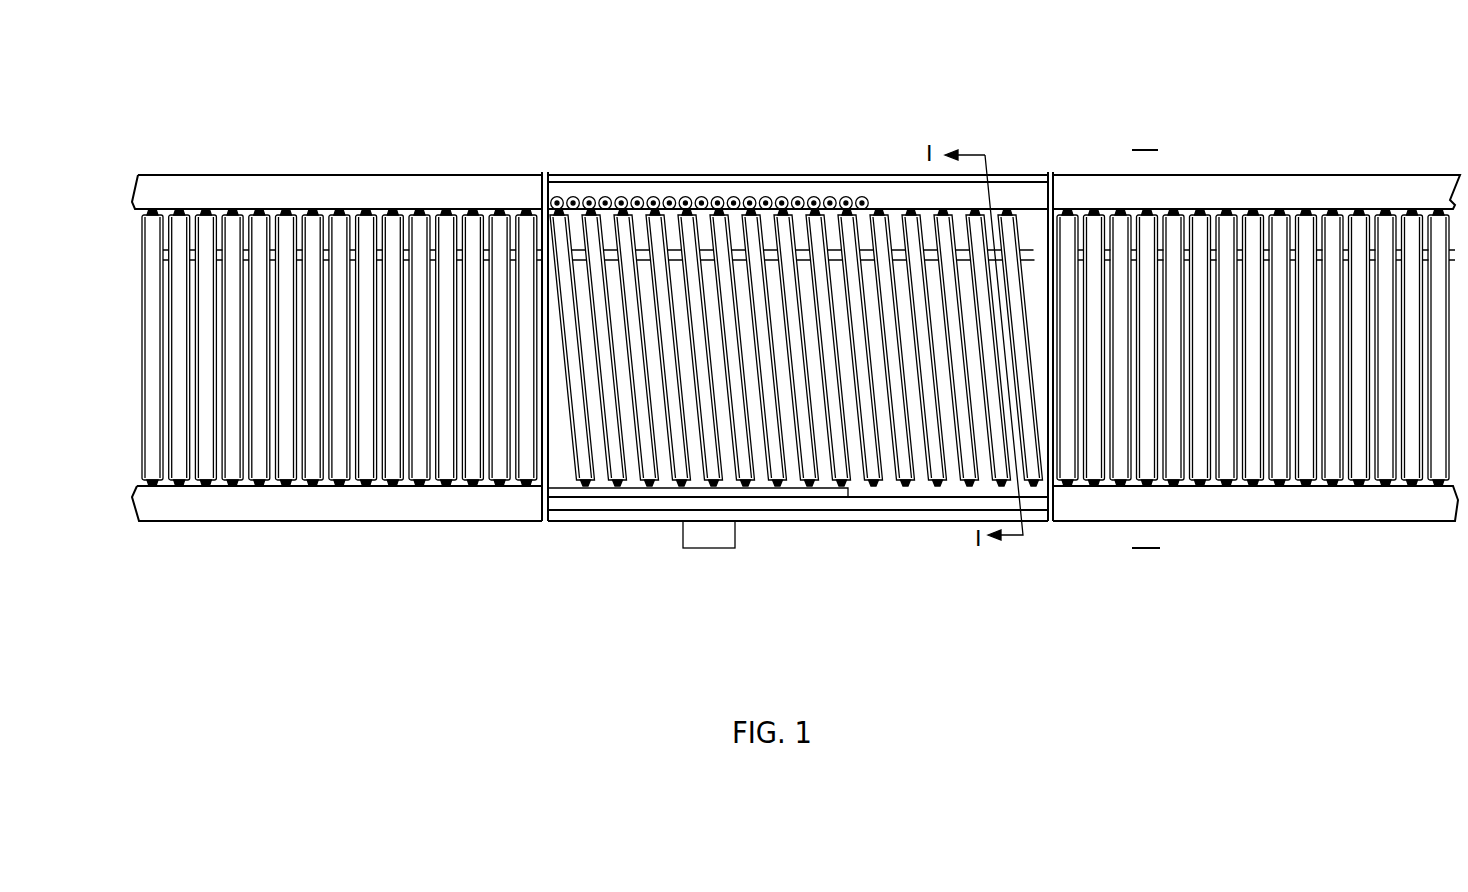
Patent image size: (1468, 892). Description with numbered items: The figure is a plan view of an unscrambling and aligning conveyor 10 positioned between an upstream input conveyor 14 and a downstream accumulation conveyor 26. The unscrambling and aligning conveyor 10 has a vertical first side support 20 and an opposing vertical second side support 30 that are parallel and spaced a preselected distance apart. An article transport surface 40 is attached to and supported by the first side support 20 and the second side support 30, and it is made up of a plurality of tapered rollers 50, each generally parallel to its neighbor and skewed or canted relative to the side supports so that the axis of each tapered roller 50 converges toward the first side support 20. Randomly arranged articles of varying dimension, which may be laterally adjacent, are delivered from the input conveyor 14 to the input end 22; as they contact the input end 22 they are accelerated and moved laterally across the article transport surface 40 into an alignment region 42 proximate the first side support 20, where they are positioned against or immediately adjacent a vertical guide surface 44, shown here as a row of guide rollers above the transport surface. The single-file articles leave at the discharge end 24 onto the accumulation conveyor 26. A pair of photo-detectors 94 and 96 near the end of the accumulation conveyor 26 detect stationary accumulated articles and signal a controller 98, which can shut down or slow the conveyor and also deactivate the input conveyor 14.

The unscrambling and aligning conveyor 10 is at (626, 148).
The input conveyor 14 is at (262, 536).
The first side support 20 is at (885, 195).
The input end 22 is at (545, 207).
The discharge end 24 is at (1037, 232).
The accumulation conveyor 26 is at (1224, 533).
The second side support 30 is at (938, 510).
The article transport surface 40 is at (690, 450).
The alignment region 42 is at (734, 226).
The vertical guide surface 44 is at (685, 197).
The tapered roller 50 is at (795, 232).
The photo-detector 94 is at (1150, 148).
The photo-detector 96 is at (1150, 550).
The controller 98 is at (700, 550).